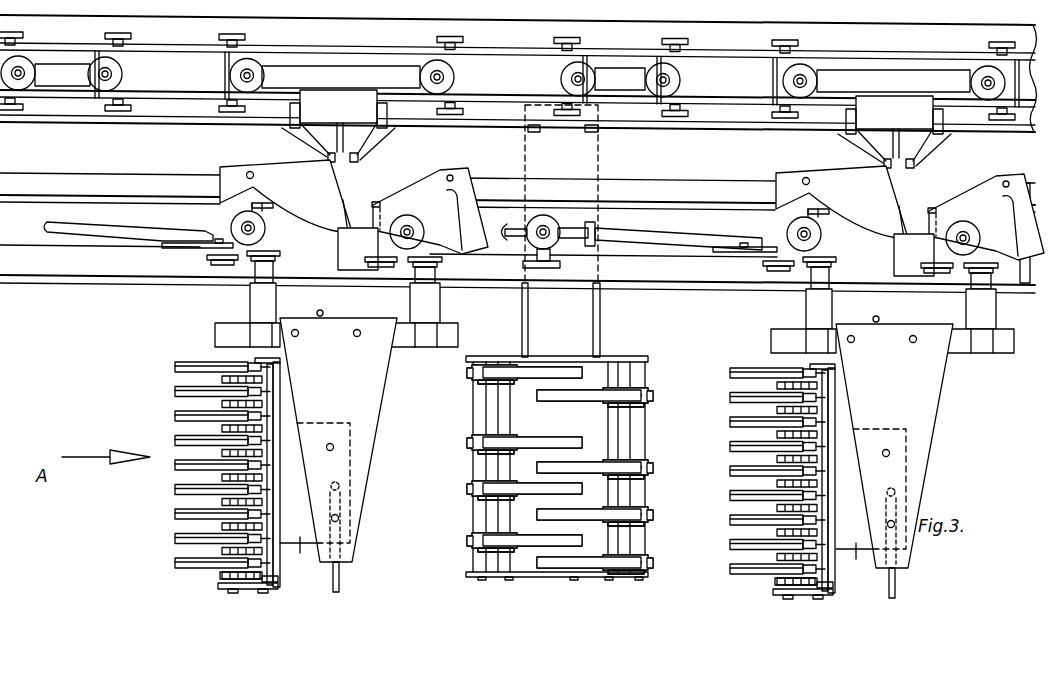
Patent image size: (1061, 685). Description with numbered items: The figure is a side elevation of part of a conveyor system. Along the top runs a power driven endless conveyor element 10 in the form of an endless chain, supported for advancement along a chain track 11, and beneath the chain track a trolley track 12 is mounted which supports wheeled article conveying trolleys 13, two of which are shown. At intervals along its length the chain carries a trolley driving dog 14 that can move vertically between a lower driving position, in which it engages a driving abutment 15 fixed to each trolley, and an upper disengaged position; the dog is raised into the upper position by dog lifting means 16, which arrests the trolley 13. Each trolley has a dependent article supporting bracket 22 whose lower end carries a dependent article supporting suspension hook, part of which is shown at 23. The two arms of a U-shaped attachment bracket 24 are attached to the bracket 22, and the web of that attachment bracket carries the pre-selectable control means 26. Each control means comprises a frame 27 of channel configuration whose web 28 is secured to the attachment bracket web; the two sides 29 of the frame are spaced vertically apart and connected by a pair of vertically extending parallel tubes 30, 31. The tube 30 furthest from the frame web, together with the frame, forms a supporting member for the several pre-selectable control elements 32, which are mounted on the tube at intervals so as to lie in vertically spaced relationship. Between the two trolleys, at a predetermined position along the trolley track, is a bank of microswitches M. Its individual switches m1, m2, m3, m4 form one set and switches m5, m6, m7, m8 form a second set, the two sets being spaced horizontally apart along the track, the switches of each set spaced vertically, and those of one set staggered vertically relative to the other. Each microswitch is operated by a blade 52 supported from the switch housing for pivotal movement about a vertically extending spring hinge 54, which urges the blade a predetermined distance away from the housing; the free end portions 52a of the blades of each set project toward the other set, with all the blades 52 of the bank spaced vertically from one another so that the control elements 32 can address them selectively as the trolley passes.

The endless conveyor element 10 is at (178, 47).
The chain track 11 is at (65, 112).
The trolley track 12 is at (120, 183).
The wheeled article conveying trolley 13 is at (300, 292).
The trolley driving dog 14 is at (327, 157).
The driving abutment 15 is at (335, 152).
The dog lifting means 16 is at (337, 196).
The dependent article supporting bracket 22 is at (372, 393).
The article supporting suspension hook 23 is at (340, 584).
The U-shaped attachment bracket 24 is at (578, 564).
The pre-selectable control means 26 is at (460, 496).
The frame 27 is at (248, 603).
The frame web 28 is at (283, 401).
The frame sides 29 is at (262, 362).
The tube 30 is at (225, 577).
The tube 31 is at (272, 579).
The pre-selectable control element 32 is at (175, 413).
The blade 52 is at (520, 372).
The blade free end portion 52a is at (580, 372).
The spring hinge 54 is at (482, 366).
The bank of microswitches M is at (561, 455).
The microswitch m1 is at (470, 366).
The microswitch m2 is at (492, 446).
The microswitch m3 is at (470, 486).
The microswitch m4 is at (470, 545).
The microswitch m5 is at (650, 401).
The microswitch m6 is at (636, 464).
The microswitch m7 is at (650, 516).
The microswitch m8 is at (650, 565).